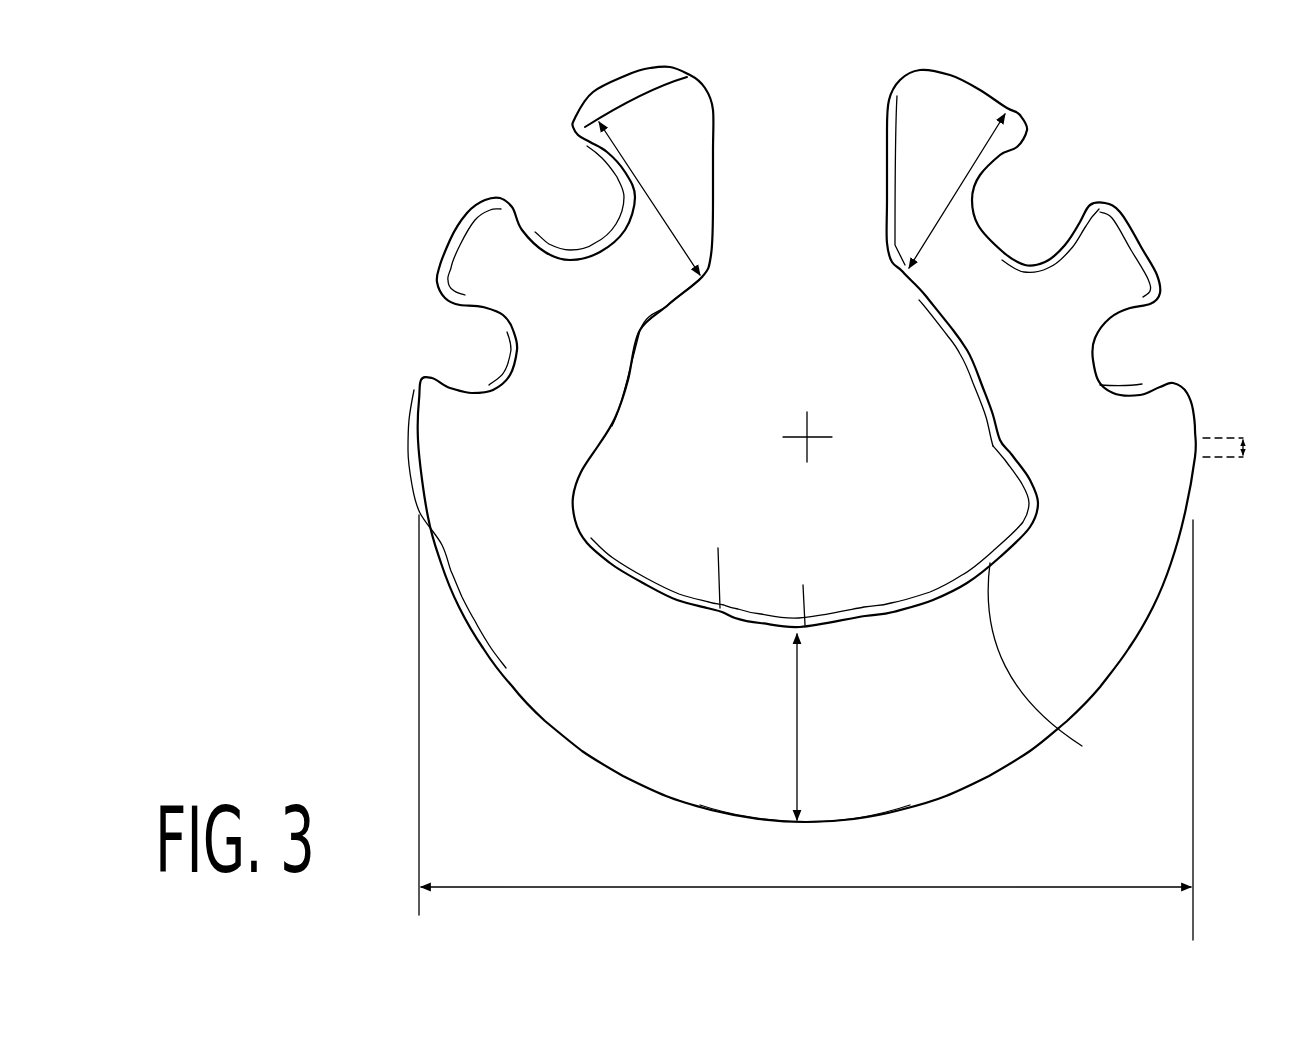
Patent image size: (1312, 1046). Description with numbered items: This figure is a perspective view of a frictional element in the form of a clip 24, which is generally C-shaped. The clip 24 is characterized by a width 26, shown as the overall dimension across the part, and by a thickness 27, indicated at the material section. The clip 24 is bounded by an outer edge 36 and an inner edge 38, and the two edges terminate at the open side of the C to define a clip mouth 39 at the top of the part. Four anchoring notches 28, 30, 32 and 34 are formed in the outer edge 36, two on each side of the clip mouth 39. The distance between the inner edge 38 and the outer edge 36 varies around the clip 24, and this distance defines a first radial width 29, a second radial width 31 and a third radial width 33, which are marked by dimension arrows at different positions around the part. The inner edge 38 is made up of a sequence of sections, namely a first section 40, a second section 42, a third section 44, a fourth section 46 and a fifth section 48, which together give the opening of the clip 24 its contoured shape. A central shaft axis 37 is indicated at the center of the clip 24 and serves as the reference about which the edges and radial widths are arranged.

The clip 24 is at (300, 561).
The width 26 is at (812, 888).
The thickness 27 is at (1246, 448).
The anchoring notch 28 is at (460, 334).
The first radial width 29 is at (662, 218).
The anchoring notch 30 is at (554, 167).
The second radial width 31 is at (800, 715).
The anchoring notch 32 is at (1033, 195).
The third radial width 33 is at (936, 227).
The anchoring notch 34 is at (1133, 343).
The outer edge 36 is at (814, 828).
The central shaft axis 37 is at (810, 443).
The inner edge 38 is at (718, 548).
The clip mouth 39 is at (786, 151).
The first section 40 is at (650, 322).
The second section 42 is at (578, 505).
The third section 44 is at (803, 585).
The fourth section 46 is at (1055, 665).
The fifth section 48 is at (950, 320).